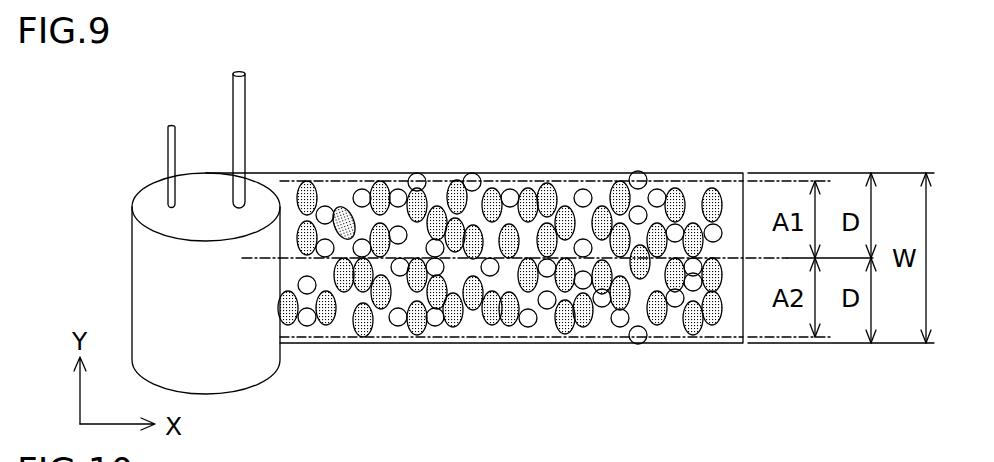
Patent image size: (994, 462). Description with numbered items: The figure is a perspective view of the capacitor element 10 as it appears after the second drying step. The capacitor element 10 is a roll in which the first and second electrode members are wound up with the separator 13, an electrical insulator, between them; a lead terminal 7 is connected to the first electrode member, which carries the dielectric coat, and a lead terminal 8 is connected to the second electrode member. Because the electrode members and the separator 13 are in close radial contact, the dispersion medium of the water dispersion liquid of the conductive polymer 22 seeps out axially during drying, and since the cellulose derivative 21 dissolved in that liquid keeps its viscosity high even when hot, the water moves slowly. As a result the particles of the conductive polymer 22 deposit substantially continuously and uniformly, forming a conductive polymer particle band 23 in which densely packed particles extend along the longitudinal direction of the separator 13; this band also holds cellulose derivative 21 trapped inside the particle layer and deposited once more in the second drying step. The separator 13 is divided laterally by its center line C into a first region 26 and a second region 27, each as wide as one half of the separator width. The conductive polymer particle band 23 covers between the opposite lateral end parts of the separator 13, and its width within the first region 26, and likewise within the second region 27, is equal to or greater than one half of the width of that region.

The lead terminal 7 is at (167, 155).
The lead terminal 8 is at (245, 125).
The capacitor element 10 is at (344, 122).
The separator 13 is at (508, 344).
The cellulose derivative 21 is at (620, 327).
The conductive polymer 22 is at (566, 341).
The conductive polymer particle band 23 is at (495, 185).
The first region 26 is at (743, 208).
The second region 27 is at (743, 308).
The center line C is at (265, 262).